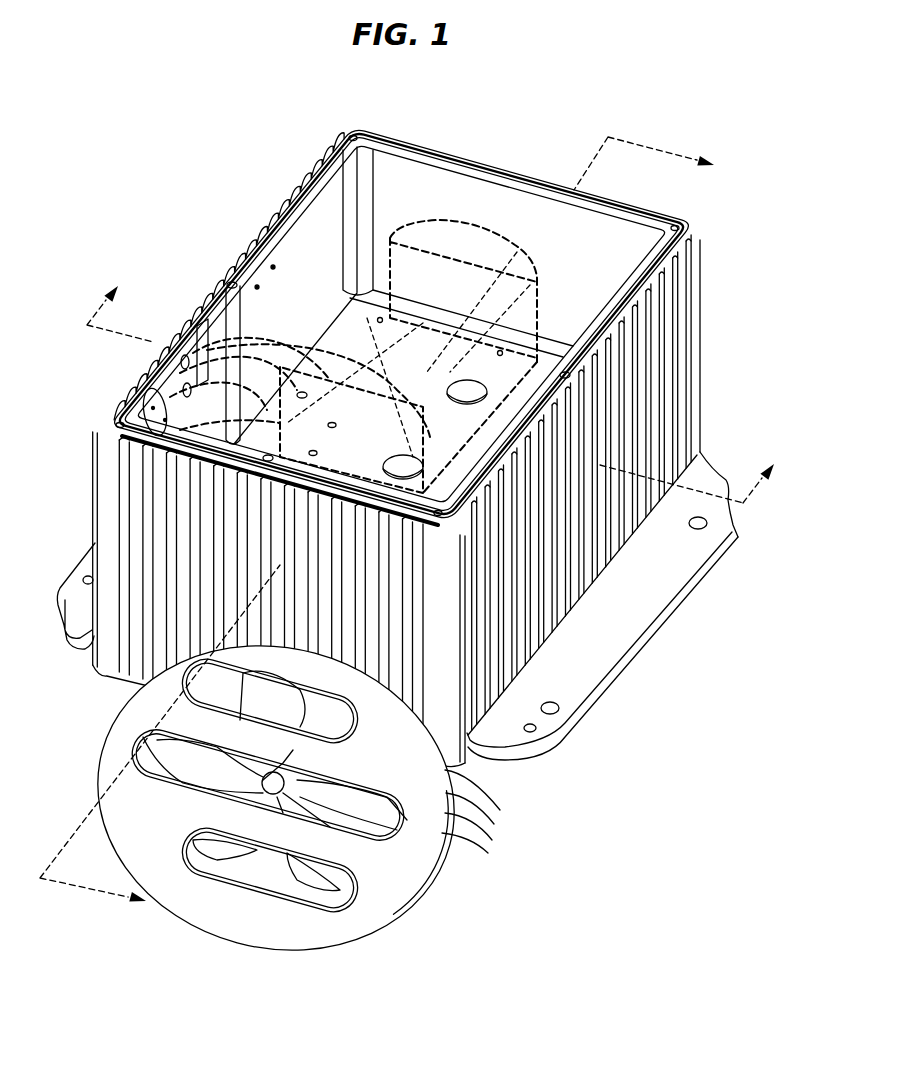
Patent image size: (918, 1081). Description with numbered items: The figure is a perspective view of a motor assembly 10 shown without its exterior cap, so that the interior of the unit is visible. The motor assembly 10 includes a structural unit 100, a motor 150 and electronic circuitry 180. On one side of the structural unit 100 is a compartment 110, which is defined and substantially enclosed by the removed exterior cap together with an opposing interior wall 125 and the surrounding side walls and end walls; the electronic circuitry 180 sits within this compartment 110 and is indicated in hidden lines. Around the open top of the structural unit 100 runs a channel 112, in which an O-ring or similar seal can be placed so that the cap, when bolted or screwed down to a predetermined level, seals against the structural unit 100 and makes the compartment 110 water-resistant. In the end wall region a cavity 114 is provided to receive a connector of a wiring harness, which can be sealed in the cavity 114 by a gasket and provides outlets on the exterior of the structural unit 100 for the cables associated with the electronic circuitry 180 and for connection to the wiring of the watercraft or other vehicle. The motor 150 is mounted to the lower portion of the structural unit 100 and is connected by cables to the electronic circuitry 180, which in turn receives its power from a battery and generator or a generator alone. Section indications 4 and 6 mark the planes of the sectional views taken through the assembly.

The motor assembly 10 is at (707, 124).
The structural unit 100 is at (703, 306).
The compartment 110 is at (637, 228).
The channel 112 is at (270, 207).
The cavity 114 is at (172, 387).
The interior wall 125 is at (546, 397).
The motor 150 is at (498, 828).
The electronic circuitry 180 is at (449, 212).
The section line 4- 4 is at (377, 523).
The section line 6- 6 is at (423, 401).